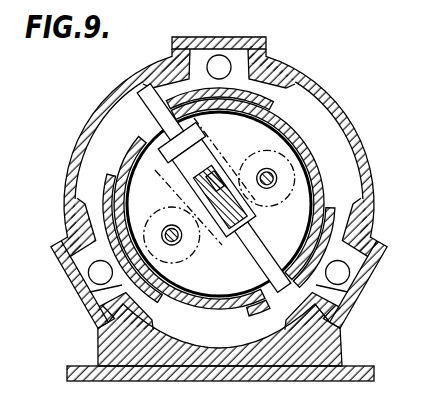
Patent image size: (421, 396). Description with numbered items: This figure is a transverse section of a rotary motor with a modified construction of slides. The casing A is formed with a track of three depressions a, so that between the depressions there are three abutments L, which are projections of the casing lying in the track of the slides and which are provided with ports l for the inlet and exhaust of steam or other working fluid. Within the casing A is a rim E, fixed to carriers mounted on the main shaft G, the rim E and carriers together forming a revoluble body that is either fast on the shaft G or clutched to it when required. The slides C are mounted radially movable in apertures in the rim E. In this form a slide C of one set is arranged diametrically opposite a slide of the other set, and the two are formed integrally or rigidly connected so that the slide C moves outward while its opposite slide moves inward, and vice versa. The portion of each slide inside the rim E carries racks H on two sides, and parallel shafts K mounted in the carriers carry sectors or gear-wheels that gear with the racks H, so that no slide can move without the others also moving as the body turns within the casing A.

The casing A is at (77, 144).
The slide C is at (250, 268).
The rim E is at (117, 172).
The main shaft G is at (210, 190).
The racks H is at (204, 250).
The parallel shafts K is at (166, 228).
The abutments L is at (84, 304).
The ports l is at (219, 197).
The depressions a is at (220, 342).